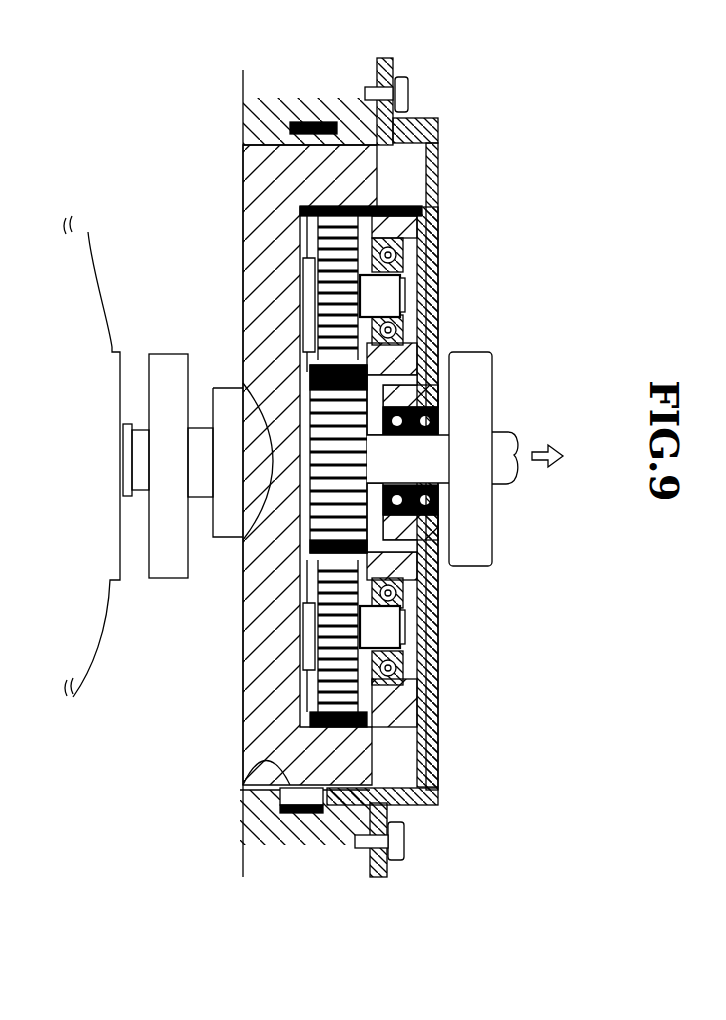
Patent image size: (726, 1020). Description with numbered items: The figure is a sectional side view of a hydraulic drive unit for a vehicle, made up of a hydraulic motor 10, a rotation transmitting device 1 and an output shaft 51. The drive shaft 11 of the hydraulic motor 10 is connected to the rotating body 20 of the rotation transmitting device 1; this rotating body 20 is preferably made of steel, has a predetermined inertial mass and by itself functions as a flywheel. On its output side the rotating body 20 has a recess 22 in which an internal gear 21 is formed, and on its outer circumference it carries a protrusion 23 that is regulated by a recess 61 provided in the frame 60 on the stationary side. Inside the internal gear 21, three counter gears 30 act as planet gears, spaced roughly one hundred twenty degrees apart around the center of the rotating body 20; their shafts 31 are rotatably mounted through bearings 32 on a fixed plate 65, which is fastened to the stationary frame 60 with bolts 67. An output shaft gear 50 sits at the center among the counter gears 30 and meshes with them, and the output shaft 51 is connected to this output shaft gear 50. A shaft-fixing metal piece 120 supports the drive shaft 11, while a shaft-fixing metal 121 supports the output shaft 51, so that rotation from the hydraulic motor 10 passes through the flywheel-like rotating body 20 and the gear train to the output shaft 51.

The rotation transmitting device 1 is at (175, 112).
The hydraulic motor 10 is at (88, 232).
The drive shaft 11 is at (202, 428).
The rotating body 20 is at (243, 166).
The internal gear 21 is at (403, 198).
The recess 22 is at (302, 220).
The protrusion 23 is at (262, 115).
The counter gear 30 is at (318, 243).
The shaft 31 is at (405, 293).
The bearing 32 is at (417, 272).
The output shaft gear 50 is at (258, 540).
The output shaft 51 is at (508, 430).
The frame 60 is at (258, 88).
The recess 61 is at (317, 122).
The fixed plate 65 is at (438, 124).
The bolt 67 is at (410, 98).
The shaft-fixing metal piece 120 is at (163, 580).
The shaft-fixing metal 121 is at (472, 567).